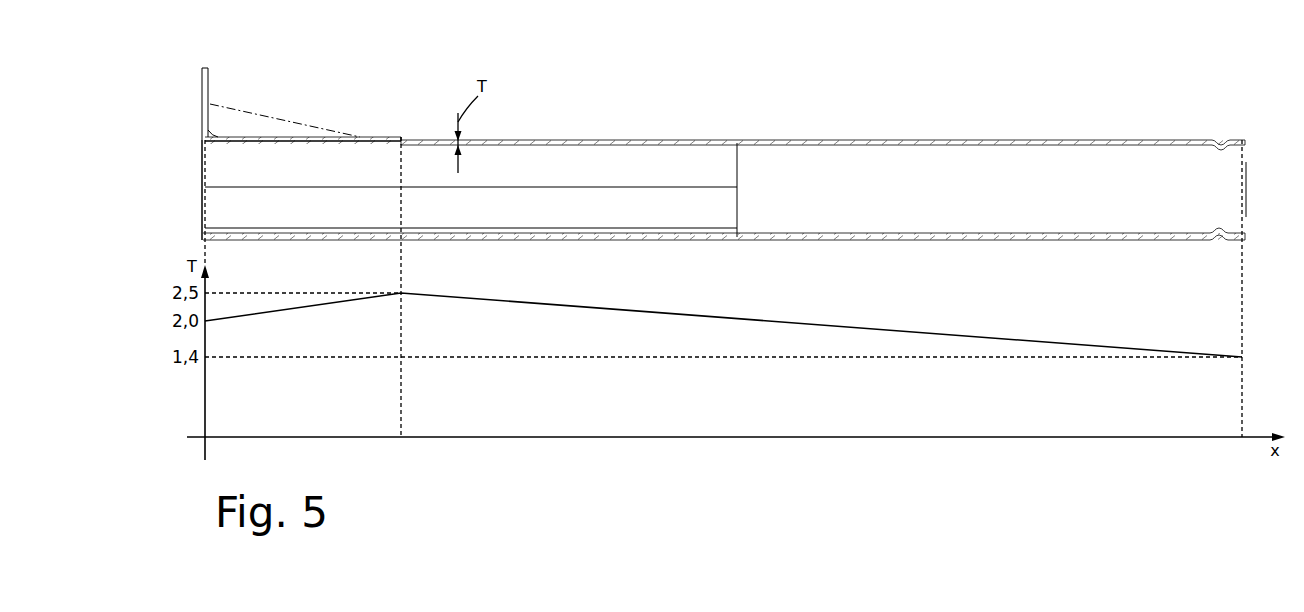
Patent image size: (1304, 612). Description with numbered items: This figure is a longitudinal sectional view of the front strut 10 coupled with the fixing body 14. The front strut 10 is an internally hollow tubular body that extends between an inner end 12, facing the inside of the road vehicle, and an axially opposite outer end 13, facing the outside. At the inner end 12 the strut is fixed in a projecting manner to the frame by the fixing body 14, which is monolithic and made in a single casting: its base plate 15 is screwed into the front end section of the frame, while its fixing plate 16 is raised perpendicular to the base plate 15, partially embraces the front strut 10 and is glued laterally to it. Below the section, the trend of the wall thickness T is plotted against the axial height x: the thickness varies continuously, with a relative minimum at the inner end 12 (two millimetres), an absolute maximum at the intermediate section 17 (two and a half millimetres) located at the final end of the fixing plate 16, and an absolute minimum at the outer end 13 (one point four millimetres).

The front strut 10 is at (963, 118).
The inner end 12 is at (195, 177).
The outer end 13 is at (1255, 195).
The fixing body 14 is at (258, 74).
The base plate 15 is at (208, 68).
The fixing plate 16 is at (287, 130).
The intermediate section 17 is at (401, 114).